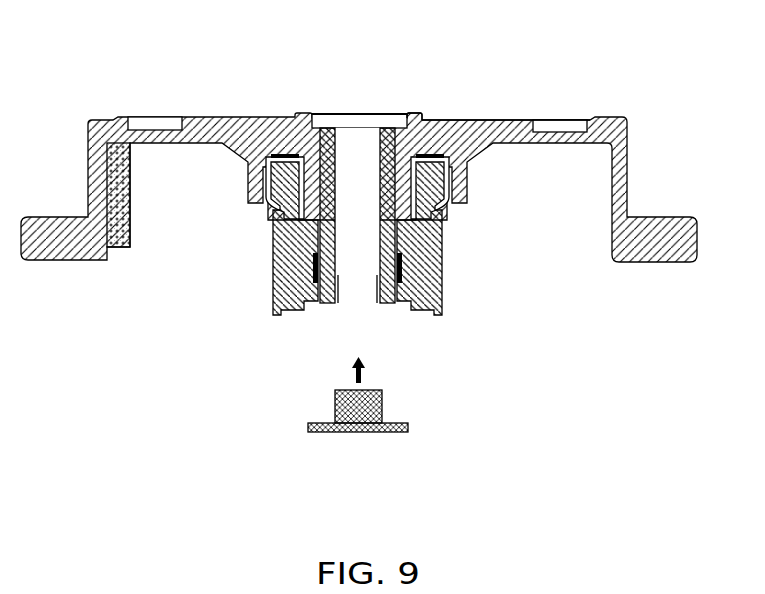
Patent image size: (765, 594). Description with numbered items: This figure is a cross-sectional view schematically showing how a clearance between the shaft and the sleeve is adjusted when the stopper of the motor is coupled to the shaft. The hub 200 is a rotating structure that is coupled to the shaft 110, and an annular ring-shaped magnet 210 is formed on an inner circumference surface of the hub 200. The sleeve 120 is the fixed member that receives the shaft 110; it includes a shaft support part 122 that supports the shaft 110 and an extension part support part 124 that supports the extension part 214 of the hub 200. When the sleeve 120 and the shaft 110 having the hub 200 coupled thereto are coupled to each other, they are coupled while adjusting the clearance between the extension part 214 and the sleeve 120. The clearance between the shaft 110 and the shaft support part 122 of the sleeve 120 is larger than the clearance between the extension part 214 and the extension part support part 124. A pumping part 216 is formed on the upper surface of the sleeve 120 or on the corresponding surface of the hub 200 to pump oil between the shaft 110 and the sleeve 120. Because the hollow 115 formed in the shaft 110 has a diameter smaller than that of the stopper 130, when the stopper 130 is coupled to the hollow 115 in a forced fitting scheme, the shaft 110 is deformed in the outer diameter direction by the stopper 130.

The hub 200 is at (513, 119).
The pumping part 216 is at (490, 119).
The extension part support part 124 is at (408, 113).
The annular ring-shaped magnet 210 is at (130, 213).
The extension part 214 is at (317, 178).
The sleeve 120 is at (290, 263).
The shaft support part 122 is at (391, 303).
The shaft 110 is at (313, 283).
The hollow 115 is at (346, 285).
The stopper 130 is at (348, 432).